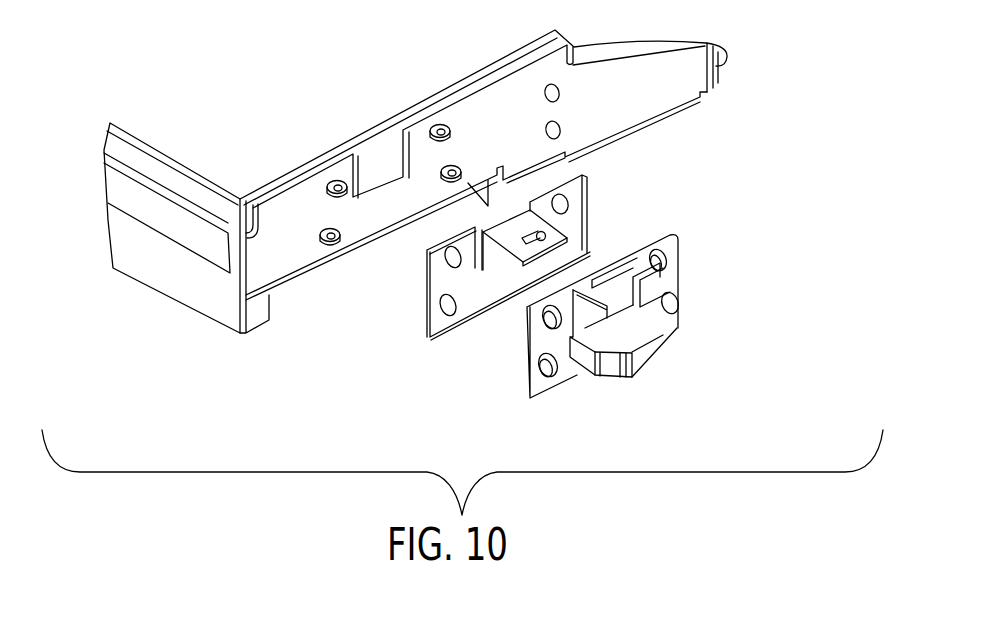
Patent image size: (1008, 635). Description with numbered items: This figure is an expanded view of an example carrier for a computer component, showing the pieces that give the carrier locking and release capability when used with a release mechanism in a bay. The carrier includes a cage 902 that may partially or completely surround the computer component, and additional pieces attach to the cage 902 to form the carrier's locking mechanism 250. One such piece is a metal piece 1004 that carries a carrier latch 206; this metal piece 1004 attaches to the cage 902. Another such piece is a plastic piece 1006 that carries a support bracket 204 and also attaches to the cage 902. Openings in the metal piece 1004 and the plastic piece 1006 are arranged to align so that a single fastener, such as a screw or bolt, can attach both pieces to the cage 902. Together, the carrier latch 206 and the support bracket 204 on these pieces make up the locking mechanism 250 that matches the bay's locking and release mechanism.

The cage 902 is at (148, 262).
The metal piece 1004 is at (435, 290).
The carrier latch 206 is at (533, 227).
The locking mechanism 250 is at (710, 258).
The plastic piece 1006 is at (540, 345).
The support bracket 204 is at (668, 345).